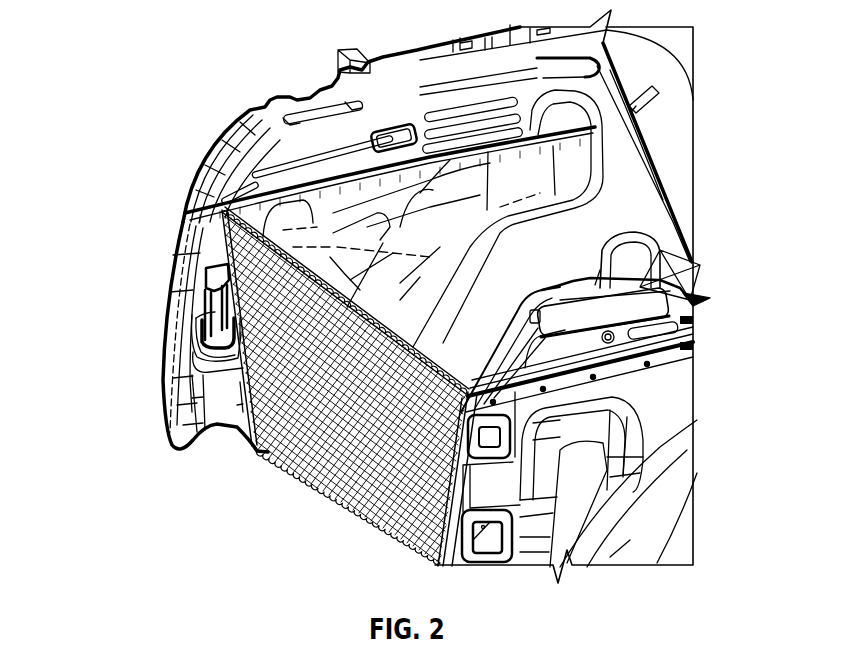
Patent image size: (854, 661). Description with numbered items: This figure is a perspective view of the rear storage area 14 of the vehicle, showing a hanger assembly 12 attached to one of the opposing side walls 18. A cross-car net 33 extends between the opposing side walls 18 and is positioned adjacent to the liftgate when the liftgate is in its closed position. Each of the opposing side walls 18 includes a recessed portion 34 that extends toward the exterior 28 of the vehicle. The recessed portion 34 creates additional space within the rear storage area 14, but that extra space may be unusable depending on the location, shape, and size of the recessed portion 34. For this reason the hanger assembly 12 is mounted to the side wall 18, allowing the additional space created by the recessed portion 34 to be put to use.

The hanger assembly 12 is at (220, 329).
The rear storage area 14 is at (637, 212).
The side wall 18 is at (630, 187).
The exterior 28 is at (118, 39).
The cross-car net 33 is at (350, 507).
The recessed portion 34 is at (313, 237).